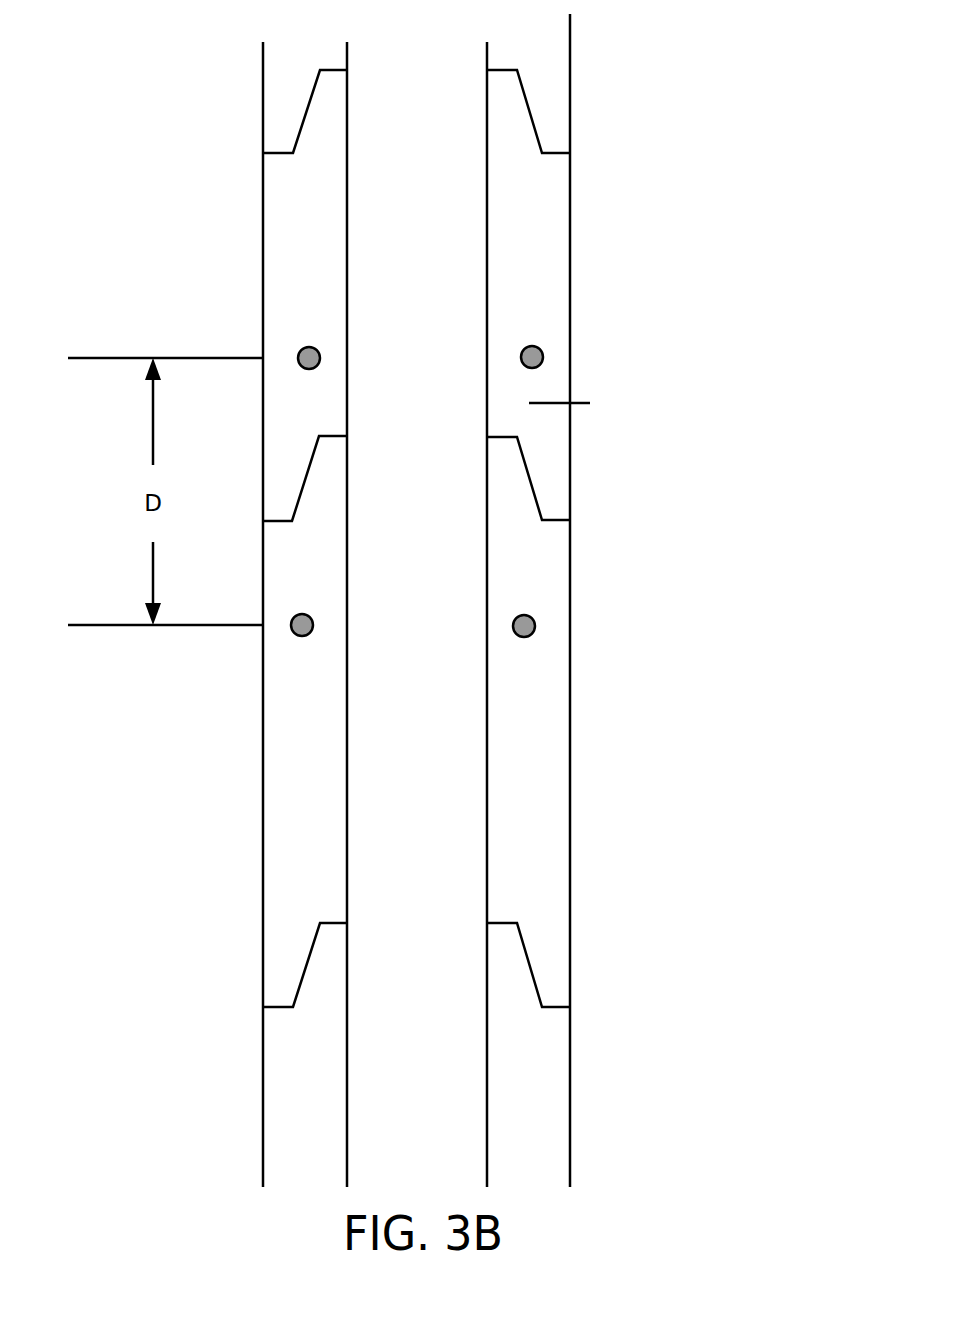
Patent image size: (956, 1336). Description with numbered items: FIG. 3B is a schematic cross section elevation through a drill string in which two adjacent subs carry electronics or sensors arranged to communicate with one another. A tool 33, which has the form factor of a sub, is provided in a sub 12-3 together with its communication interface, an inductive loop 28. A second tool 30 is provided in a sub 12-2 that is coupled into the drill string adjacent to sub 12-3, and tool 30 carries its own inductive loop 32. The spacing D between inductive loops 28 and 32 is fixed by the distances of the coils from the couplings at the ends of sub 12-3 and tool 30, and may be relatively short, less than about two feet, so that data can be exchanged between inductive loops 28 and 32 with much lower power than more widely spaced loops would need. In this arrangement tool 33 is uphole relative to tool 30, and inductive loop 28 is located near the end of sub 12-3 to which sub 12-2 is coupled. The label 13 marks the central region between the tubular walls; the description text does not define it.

The sub 12-3 is at (570, 176).
The sub 12-2 is at (570, 683).
The tubular string 13 is at (350, 614).
The inductive loop 28 is at (543, 357).
The tool 30 is at (570, 820).
The inductive loop 32 is at (534, 619).
The tool 33 is at (590, 403).